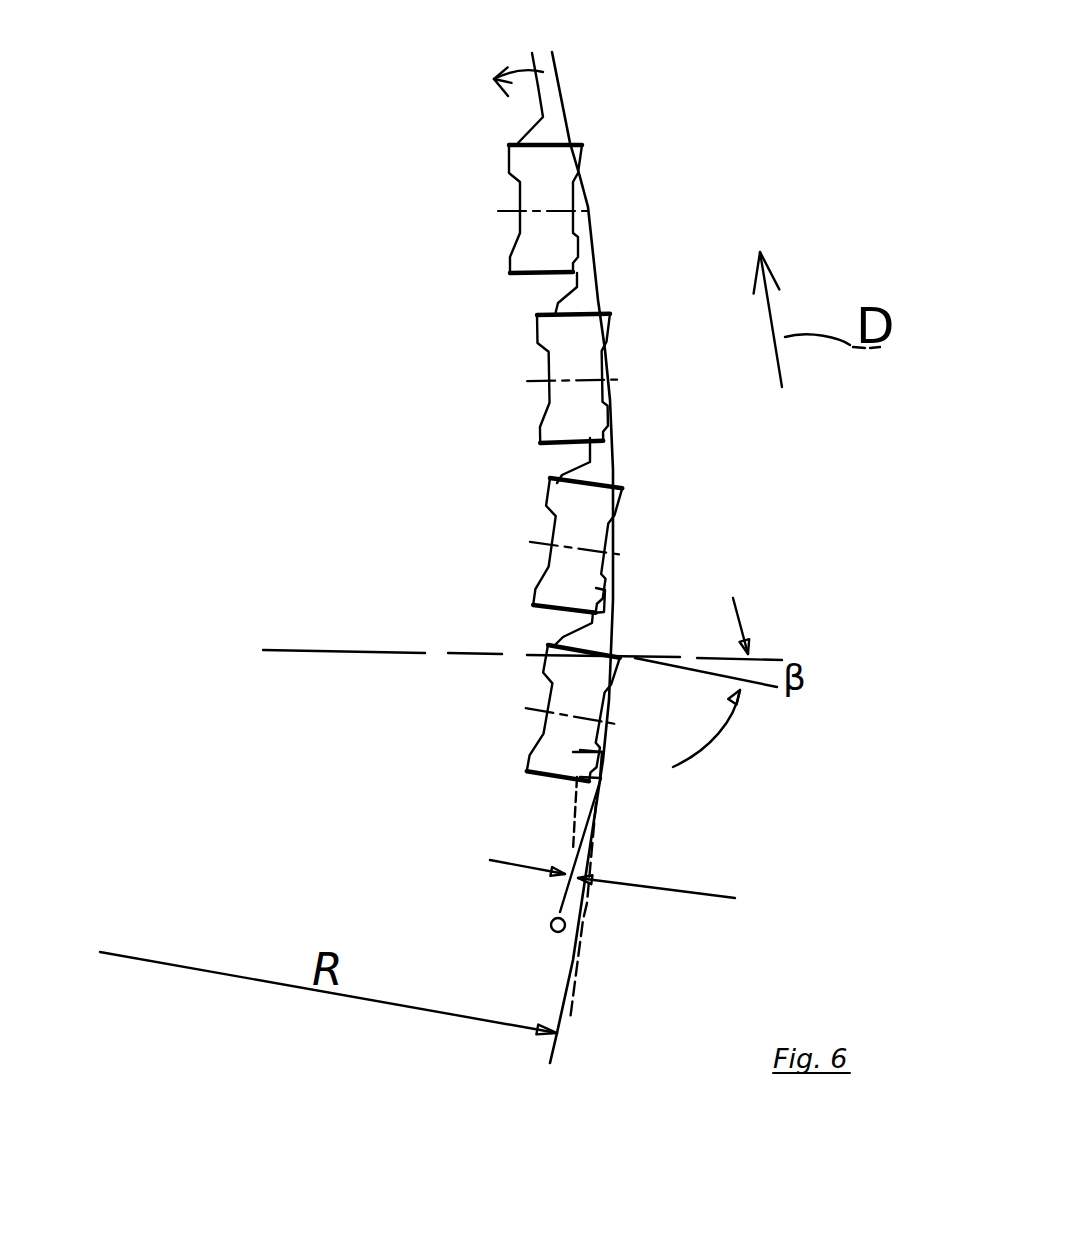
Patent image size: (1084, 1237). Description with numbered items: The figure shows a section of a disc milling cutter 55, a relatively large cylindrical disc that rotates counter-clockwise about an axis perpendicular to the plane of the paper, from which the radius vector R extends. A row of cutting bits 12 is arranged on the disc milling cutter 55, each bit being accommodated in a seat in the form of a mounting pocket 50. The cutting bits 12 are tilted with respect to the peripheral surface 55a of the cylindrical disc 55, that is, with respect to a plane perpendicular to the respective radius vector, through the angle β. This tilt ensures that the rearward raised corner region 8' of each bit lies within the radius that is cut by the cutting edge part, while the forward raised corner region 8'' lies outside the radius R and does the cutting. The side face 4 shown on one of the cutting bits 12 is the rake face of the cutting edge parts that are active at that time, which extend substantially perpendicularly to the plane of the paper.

The side face 4 is at (590, 477).
The cutting bit 12 is at (555, 193).
The mounting pocket 50 is at (647, 221).
The disc milling cutter 55 is at (557, 57).
The peripheral surface 55a is at (562, 82).
The rearward raised corner region 8' is at (658, 586).
The forward raised corner region 8'' is at (631, 543).